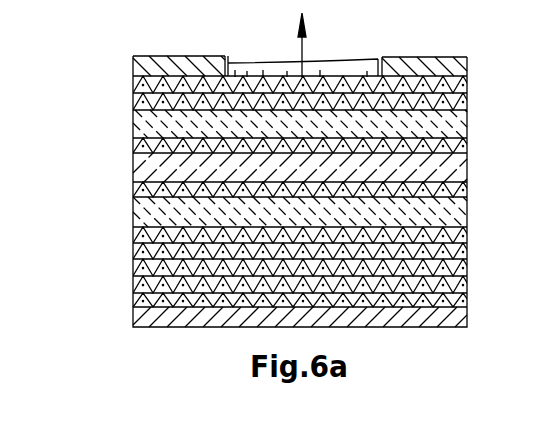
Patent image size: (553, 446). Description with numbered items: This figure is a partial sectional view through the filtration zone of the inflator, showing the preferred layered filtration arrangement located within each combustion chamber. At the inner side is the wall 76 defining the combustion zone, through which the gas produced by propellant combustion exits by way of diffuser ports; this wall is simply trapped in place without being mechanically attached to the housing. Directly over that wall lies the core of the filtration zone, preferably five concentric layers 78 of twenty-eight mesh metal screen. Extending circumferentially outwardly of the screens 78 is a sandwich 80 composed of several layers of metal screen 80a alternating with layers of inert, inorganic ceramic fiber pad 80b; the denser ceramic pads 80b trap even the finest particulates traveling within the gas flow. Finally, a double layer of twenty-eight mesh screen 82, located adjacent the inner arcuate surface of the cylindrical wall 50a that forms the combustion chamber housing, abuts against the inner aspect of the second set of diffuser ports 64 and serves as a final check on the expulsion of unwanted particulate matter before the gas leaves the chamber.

The cylindrical wall 50a is at (188, 72).
The second set of diffuser ports 64 is at (327, 72).
The double layer of 28 mesh screen 82 is at (475, 78).
The sandwich 80 is at (472, 112).
The metal screen 80a is at (140, 148).
The ceramic fiber pad 80b is at (148, 120).
The concentric layers of metal screen 78 is at (123, 223).
The wall 76 is at (163, 317).